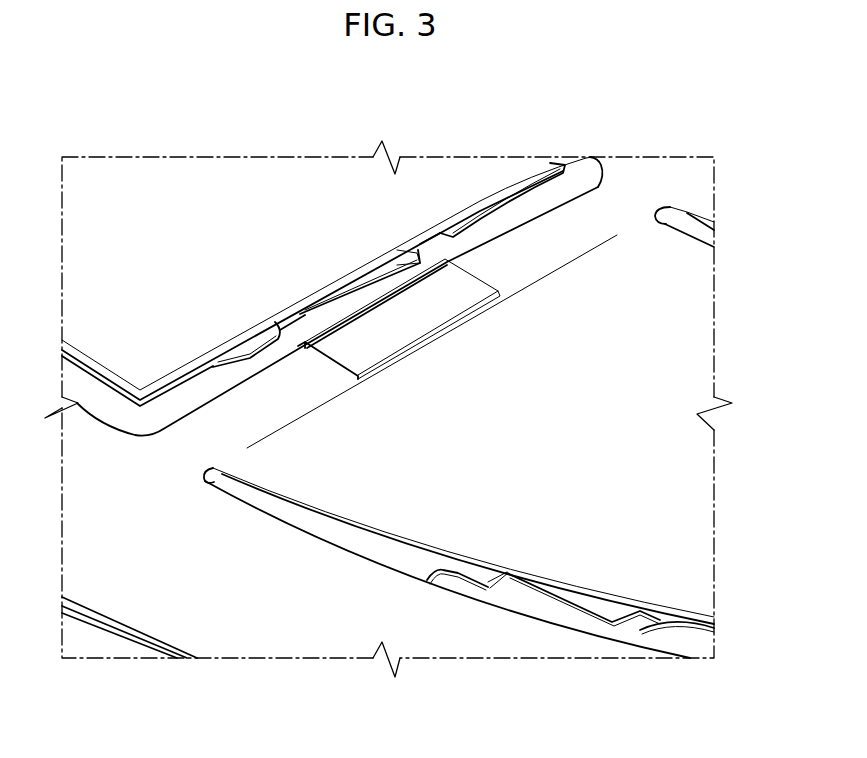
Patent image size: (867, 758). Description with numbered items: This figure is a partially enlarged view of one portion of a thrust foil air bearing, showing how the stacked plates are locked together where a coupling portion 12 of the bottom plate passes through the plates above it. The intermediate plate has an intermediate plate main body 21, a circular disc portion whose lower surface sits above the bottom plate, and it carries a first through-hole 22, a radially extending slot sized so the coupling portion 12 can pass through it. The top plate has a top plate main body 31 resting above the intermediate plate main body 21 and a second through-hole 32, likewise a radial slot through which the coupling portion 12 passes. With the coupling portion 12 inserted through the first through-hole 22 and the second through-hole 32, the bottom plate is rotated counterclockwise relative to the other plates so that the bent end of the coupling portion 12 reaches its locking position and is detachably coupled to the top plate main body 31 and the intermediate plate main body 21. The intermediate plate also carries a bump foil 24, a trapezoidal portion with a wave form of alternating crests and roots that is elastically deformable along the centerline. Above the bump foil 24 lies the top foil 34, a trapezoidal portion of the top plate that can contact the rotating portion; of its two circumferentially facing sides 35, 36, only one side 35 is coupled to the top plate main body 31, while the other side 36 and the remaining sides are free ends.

The coupling portion 12 is at (368, 347).
The intermediate plate main body 21 is at (327, 528).
The first through-hole 22 is at (312, 288).
The bump foil 24 is at (402, 255).
The top plate main body 31 is at (543, 240).
The second through-hole 32 is at (345, 300).
The top foil 34 is at (243, 222).
The one side of the top foil 35 is at (591, 245).
The other side of the top foil 36 is at (433, 222).